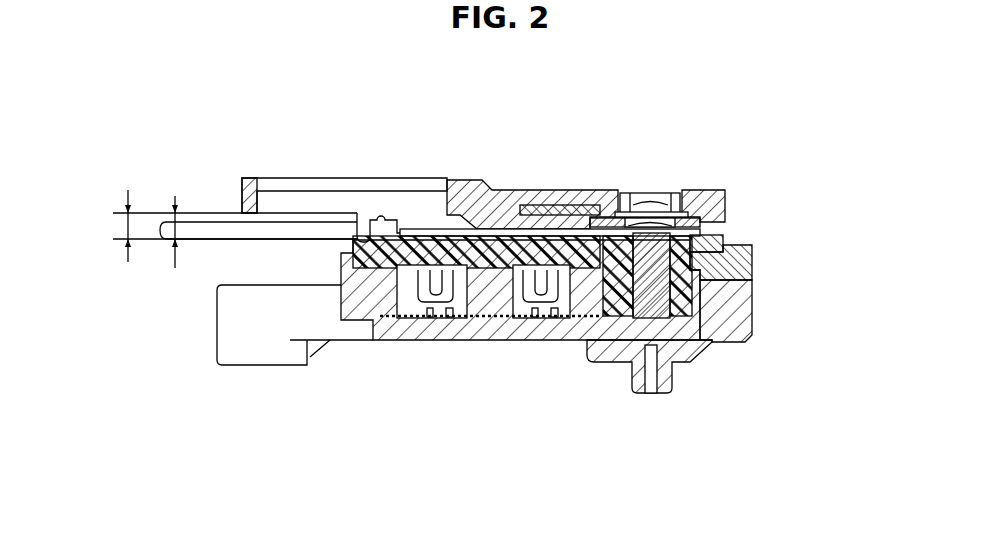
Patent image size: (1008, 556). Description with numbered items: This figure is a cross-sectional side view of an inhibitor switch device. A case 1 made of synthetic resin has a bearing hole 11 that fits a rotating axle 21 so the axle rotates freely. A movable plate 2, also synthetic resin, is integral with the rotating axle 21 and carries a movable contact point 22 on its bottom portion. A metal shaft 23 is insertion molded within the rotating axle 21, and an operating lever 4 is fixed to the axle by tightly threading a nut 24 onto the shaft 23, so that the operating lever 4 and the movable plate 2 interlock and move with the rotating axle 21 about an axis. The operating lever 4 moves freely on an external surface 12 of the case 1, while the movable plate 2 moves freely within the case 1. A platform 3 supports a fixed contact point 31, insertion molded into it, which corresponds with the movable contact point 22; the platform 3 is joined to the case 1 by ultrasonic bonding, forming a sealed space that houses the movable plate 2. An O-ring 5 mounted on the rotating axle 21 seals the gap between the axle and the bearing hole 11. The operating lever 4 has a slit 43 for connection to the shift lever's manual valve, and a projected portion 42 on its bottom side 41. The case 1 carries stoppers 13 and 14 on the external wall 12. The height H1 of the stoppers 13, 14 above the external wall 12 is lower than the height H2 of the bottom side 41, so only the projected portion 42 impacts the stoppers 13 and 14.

The case 1 is at (755, 229).
The movable plate 2 is at (506, 318).
The platform 3 is at (699, 370).
The operating lever 4 is at (480, 176).
The O-ring 5 is at (748, 270).
The bearing hole 11 is at (712, 240).
The external surface 12 is at (500, 238).
The stopper 13 is at (398, 237).
The stopper 14 is at (723, 240).
The rotating axle 21 is at (613, 360).
The movable contact point 22 is at (416, 320).
The metal shaft 23 is at (712, 353).
The nut 24 is at (677, 217).
The fixed contact point 31 is at (440, 317).
The bottom side 41 is at (373, 218).
The projected portion 42 is at (395, 218).
The slit 43 is at (268, 180).
The height of the stoppers H1 is at (175, 226).
The height of the bottom side H2 is at (128, 228).